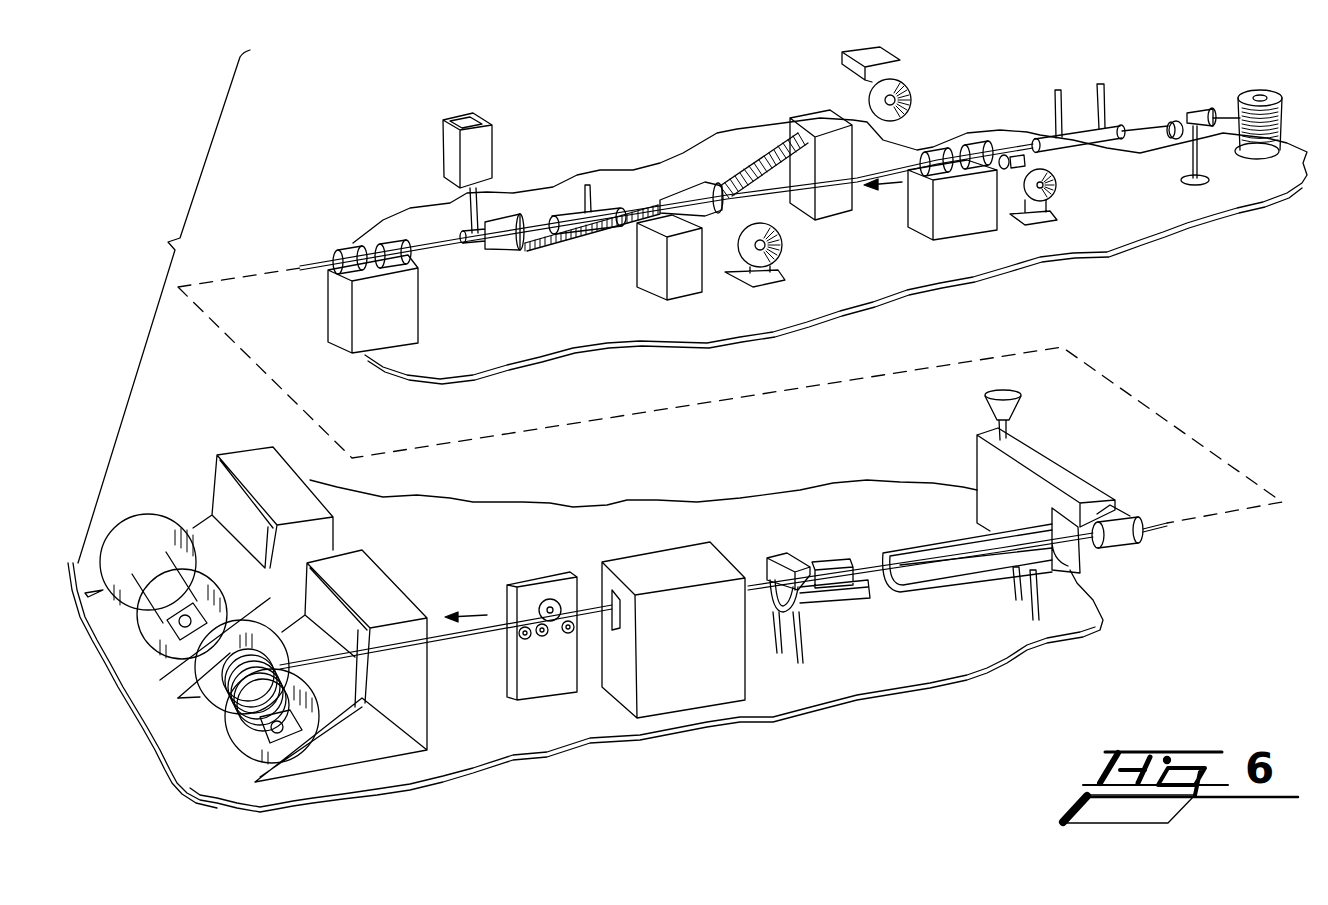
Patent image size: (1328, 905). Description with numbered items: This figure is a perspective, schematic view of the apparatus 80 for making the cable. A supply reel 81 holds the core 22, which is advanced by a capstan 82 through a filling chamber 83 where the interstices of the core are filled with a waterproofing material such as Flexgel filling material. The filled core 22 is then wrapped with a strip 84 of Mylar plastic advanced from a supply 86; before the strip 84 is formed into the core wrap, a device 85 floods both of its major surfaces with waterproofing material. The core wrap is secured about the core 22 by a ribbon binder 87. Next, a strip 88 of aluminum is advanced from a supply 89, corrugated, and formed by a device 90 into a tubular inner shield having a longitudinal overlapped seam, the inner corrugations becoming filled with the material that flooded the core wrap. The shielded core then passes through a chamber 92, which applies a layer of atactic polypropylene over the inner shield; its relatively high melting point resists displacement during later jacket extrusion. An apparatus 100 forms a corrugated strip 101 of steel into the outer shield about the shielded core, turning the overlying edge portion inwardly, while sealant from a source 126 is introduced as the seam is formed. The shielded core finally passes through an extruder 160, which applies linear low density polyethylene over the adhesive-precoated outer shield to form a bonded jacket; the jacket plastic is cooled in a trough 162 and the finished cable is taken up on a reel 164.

The apparatus 80 is at (164, 306).
The supply reel 81 is at (1270, 95).
The core 22 is at (1222, 112).
The filling chamber 83 is at (1110, 125).
The strip of plastic material 84 is at (1040, 160).
The device 85 is at (1010, 167).
The supply 86 is at (1050, 190).
The ribbon binder 87 is at (942, 148).
The strip of aluminum 88 is at (870, 122).
The supply 89 is at (907, 92).
The device 90 is at (698, 187).
The chamber 92 is at (612, 212).
The apparatus 100 is at (505, 218).
The corrugated strip of steel 101 is at (547, 247).
The source of sealant material 126 is at (483, 138).
The capstan 82 is at (637, 562).
The extruder 160 is at (1052, 468).
The trough 162 is at (933, 580).
The reel 164 is at (250, 735).